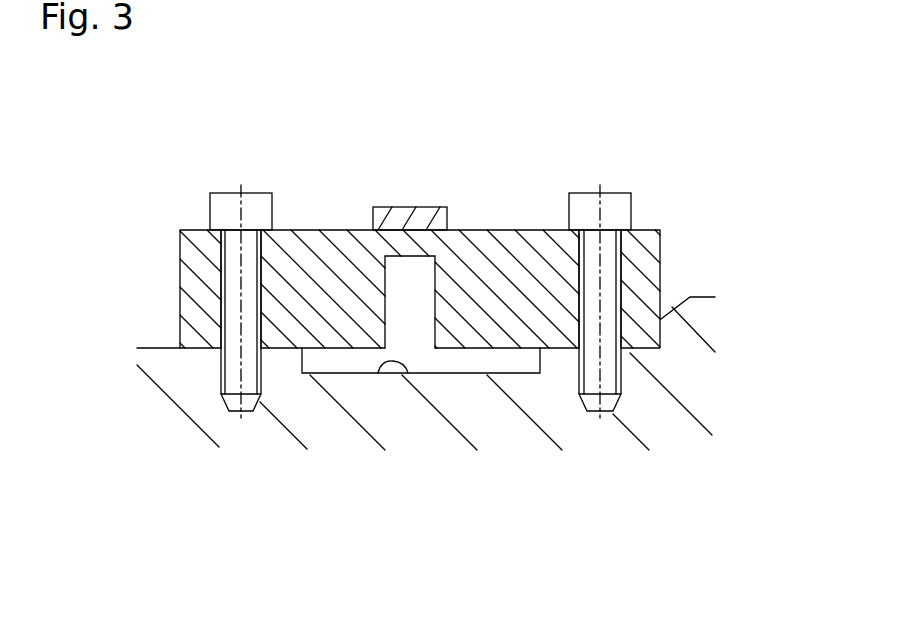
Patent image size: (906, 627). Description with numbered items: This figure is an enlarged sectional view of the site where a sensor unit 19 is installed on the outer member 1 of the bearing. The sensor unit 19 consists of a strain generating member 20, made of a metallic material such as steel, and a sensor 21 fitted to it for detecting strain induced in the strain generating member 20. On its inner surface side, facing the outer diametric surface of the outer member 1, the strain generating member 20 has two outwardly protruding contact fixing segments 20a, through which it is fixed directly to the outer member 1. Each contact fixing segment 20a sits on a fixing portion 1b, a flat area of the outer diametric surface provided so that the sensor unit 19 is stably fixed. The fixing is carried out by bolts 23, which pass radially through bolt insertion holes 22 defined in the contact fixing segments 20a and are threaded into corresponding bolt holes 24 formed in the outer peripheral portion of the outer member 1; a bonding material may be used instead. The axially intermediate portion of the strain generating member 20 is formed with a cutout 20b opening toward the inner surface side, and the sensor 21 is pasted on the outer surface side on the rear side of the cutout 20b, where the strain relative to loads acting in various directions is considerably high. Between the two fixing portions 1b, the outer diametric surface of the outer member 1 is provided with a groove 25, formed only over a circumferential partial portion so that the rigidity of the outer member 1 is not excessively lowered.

The outer member 1 is at (147, 343).
The fixing portion 1b is at (198, 347).
The sensor unit 19 is at (536, 205).
The strain generating member 20 is at (483, 230).
The contact fixing segment 20a is at (198, 282).
The cutout 20b is at (414, 257).
The sensor 21 is at (412, 207).
The bolt insertion hole 22 is at (262, 296).
The bolt 23 is at (233, 193).
The bolt hole 24 is at (228, 402).
The groove 25 is at (378, 373).